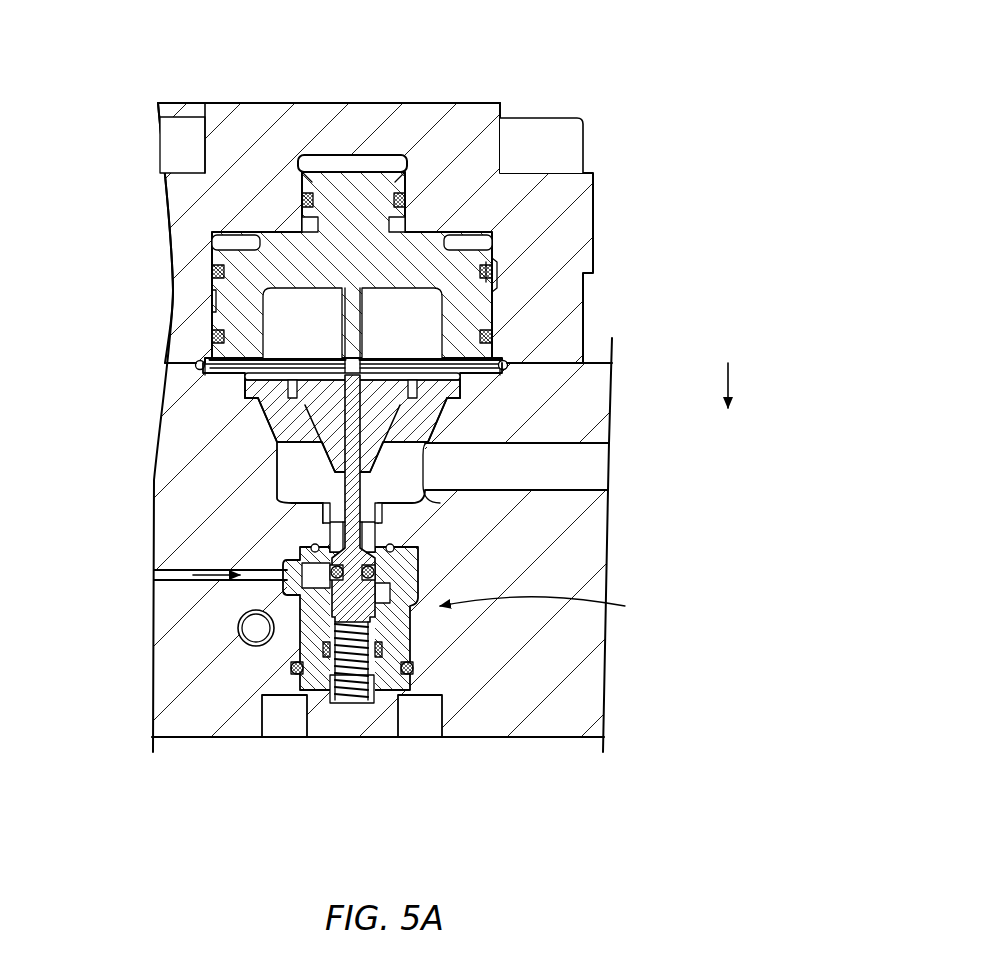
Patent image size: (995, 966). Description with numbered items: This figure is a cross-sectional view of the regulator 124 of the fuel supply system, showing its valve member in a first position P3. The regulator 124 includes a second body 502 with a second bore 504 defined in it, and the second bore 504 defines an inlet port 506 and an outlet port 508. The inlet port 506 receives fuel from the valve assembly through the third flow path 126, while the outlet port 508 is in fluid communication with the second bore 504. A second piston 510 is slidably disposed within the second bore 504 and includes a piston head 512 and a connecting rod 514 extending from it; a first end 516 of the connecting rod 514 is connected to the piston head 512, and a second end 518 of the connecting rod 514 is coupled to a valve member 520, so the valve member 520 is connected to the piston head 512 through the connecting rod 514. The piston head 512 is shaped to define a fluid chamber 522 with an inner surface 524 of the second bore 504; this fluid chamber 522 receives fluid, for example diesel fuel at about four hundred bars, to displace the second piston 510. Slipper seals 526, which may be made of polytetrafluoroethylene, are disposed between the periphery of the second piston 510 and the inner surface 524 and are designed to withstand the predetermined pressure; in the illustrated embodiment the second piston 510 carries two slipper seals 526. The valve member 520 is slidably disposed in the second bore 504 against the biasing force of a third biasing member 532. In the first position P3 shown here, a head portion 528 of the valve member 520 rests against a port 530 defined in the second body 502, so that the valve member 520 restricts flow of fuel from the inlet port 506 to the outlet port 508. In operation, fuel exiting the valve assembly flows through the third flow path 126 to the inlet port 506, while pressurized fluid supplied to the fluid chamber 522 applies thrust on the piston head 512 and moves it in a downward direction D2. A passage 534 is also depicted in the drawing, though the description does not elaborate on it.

The regulator 124 is at (153, 55).
The second body 502 is at (472, 110).
The second bore 504 is at (485, 246).
The second piston 510 is at (422, 252).
The inner surface 524 is at (238, 241).
The fluid chamber 522 is at (218, 247).
The slipper seal 526 is at (212, 337).
The piston head 512 is at (470, 323).
The first end 516 is at (362, 300).
The outlet port 508 is at (420, 490).
The fluid passage 534 is at (598, 462).
The connecting rod 514 is at (300, 400).
The inlet port 506 is at (290, 562).
The third flow path 126 is at (155, 577).
The port 530 is at (330, 548).
The valve member 520 is at (338, 592).
The second end 518 is at (352, 548).
The head portion 528 is at (376, 572).
The third biasing member 532 is at (350, 700).
The first position P3 is at (544, 608).
The downward direction D2 is at (729, 388).